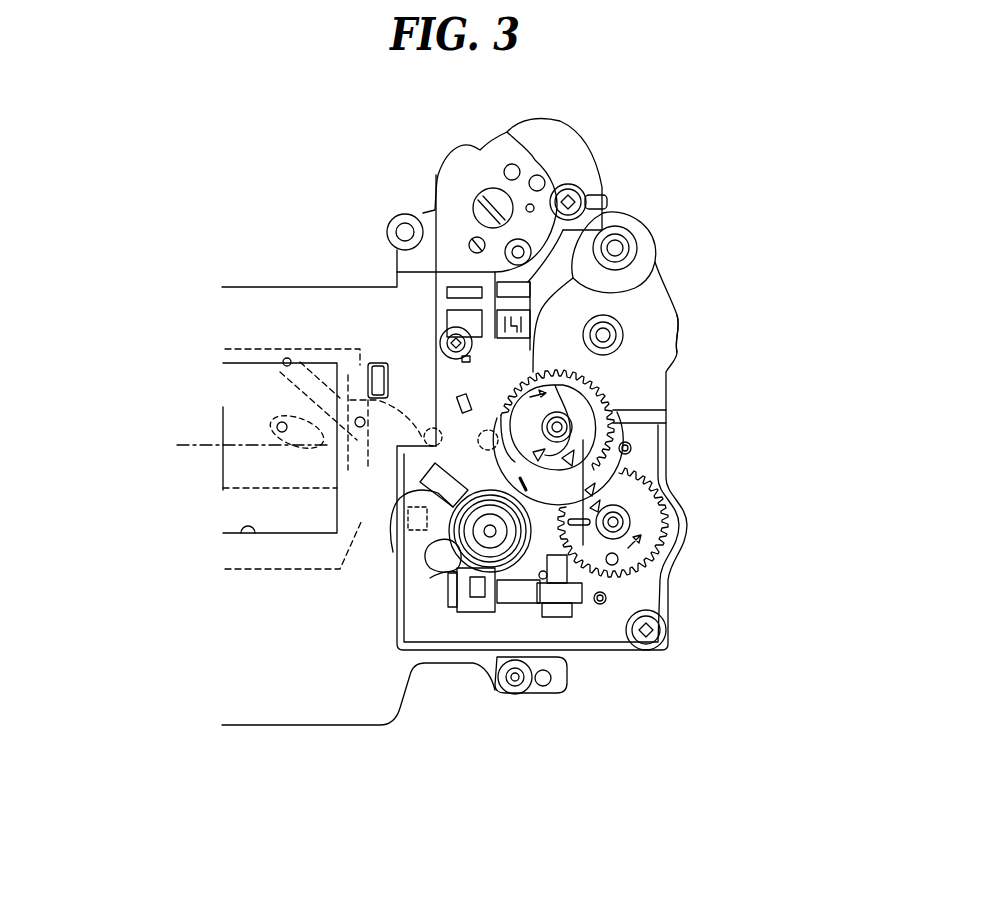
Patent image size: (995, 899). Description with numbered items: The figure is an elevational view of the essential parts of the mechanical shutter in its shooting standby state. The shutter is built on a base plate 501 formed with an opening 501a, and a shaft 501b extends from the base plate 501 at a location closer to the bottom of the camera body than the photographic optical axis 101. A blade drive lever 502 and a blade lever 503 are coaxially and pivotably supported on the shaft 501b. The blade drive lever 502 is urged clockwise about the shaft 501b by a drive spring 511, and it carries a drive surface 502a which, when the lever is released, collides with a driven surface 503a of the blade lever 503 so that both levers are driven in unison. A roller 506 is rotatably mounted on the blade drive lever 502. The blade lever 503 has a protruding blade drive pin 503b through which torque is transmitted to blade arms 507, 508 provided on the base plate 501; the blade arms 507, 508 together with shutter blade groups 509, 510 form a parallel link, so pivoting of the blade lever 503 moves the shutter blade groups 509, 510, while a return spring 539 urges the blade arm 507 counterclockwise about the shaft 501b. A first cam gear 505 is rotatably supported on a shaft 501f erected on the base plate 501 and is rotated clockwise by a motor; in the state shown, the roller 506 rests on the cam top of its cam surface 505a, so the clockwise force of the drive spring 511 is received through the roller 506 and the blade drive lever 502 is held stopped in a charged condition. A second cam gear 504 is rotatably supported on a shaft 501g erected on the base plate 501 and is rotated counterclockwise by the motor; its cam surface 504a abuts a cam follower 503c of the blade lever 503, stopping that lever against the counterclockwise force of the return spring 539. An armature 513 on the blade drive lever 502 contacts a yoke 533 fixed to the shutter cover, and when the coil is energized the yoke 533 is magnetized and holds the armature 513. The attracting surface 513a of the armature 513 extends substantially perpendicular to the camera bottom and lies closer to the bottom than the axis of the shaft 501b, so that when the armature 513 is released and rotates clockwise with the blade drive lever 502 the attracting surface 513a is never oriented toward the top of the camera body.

The photographic optical axis 101 is at (223, 443).
The base plate 501 is at (372, 300).
The opening 501a is at (250, 540).
The shaft 501b is at (580, 592).
The shaft 501f is at (572, 415).
The shaft 501g is at (616, 523).
The blade drive lever 502 is at (412, 540).
The drive surface 502a is at (490, 566).
The blade lever 503 is at (405, 478).
The driven surface 503a is at (430, 578).
The blade drive pin 503b is at (385, 553).
The cam follower 503c is at (666, 640).
The second cam gear 504 is at (668, 553).
The cam surface 504a is at (606, 597).
The first cam gear 505 is at (628, 446).
The cam surface 505a is at (608, 492).
The roller 506 is at (473, 447).
The blade arm 507 is at (330, 384).
The blade arm 508 is at (320, 470).
The shutter blade group 509 is at (242, 572).
The shutter blade group 510 is at (263, 347).
The drive spring 511 is at (540, 618).
The armature 513 is at (462, 612).
The attracting surface 513a is at (478, 600).
The yoke 533 is at (513, 645).
The return spring 539 is at (487, 422).